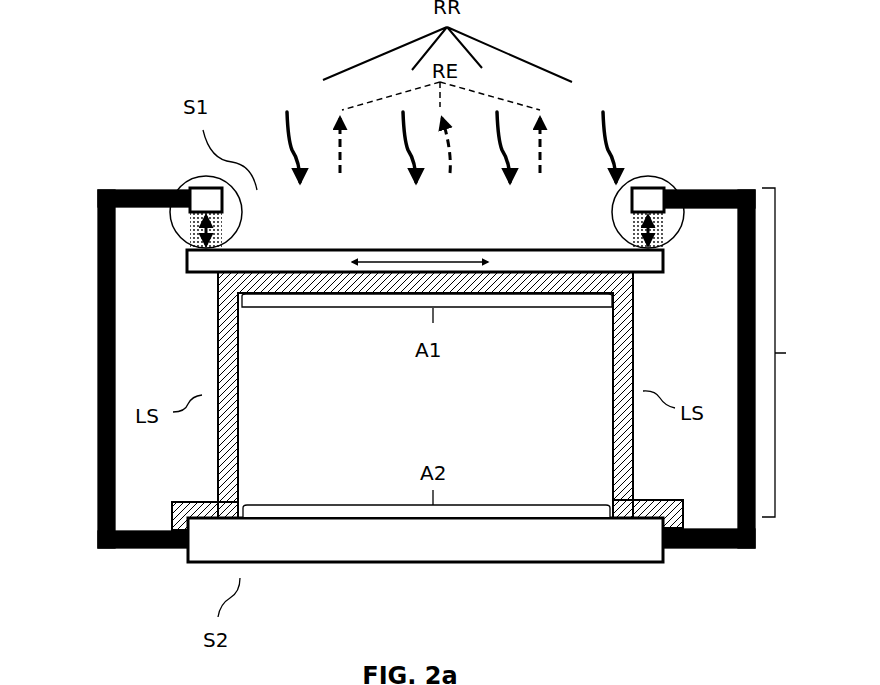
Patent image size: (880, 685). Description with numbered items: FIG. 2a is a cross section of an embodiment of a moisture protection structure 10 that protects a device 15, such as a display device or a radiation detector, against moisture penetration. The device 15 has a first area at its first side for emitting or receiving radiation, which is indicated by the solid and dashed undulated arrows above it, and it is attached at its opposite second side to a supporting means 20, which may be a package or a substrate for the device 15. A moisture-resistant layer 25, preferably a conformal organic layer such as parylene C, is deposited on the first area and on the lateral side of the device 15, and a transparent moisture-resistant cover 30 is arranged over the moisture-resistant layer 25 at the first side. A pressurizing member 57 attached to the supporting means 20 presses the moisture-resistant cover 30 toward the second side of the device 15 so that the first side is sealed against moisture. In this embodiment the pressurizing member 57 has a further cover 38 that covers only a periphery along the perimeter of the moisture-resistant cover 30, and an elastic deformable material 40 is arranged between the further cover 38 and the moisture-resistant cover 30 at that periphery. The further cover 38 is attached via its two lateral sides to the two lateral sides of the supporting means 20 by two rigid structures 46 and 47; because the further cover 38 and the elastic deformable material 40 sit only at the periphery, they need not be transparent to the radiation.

The moisture protection structure 10 is at (792, 352).
The device 15 is at (257, 469).
The supporting means 20 is at (565, 548).
The moisture-resistant layer 25 is at (620, 367).
The moisture-resistant cover 30 is at (650, 266).
The further cover 38 is at (210, 198).
The elastic deformable material 40 is at (200, 226).
The rigid structure 46 is at (98, 427).
The rigid structure 47 is at (750, 423).
The pressurizing member 57 is at (185, 178).